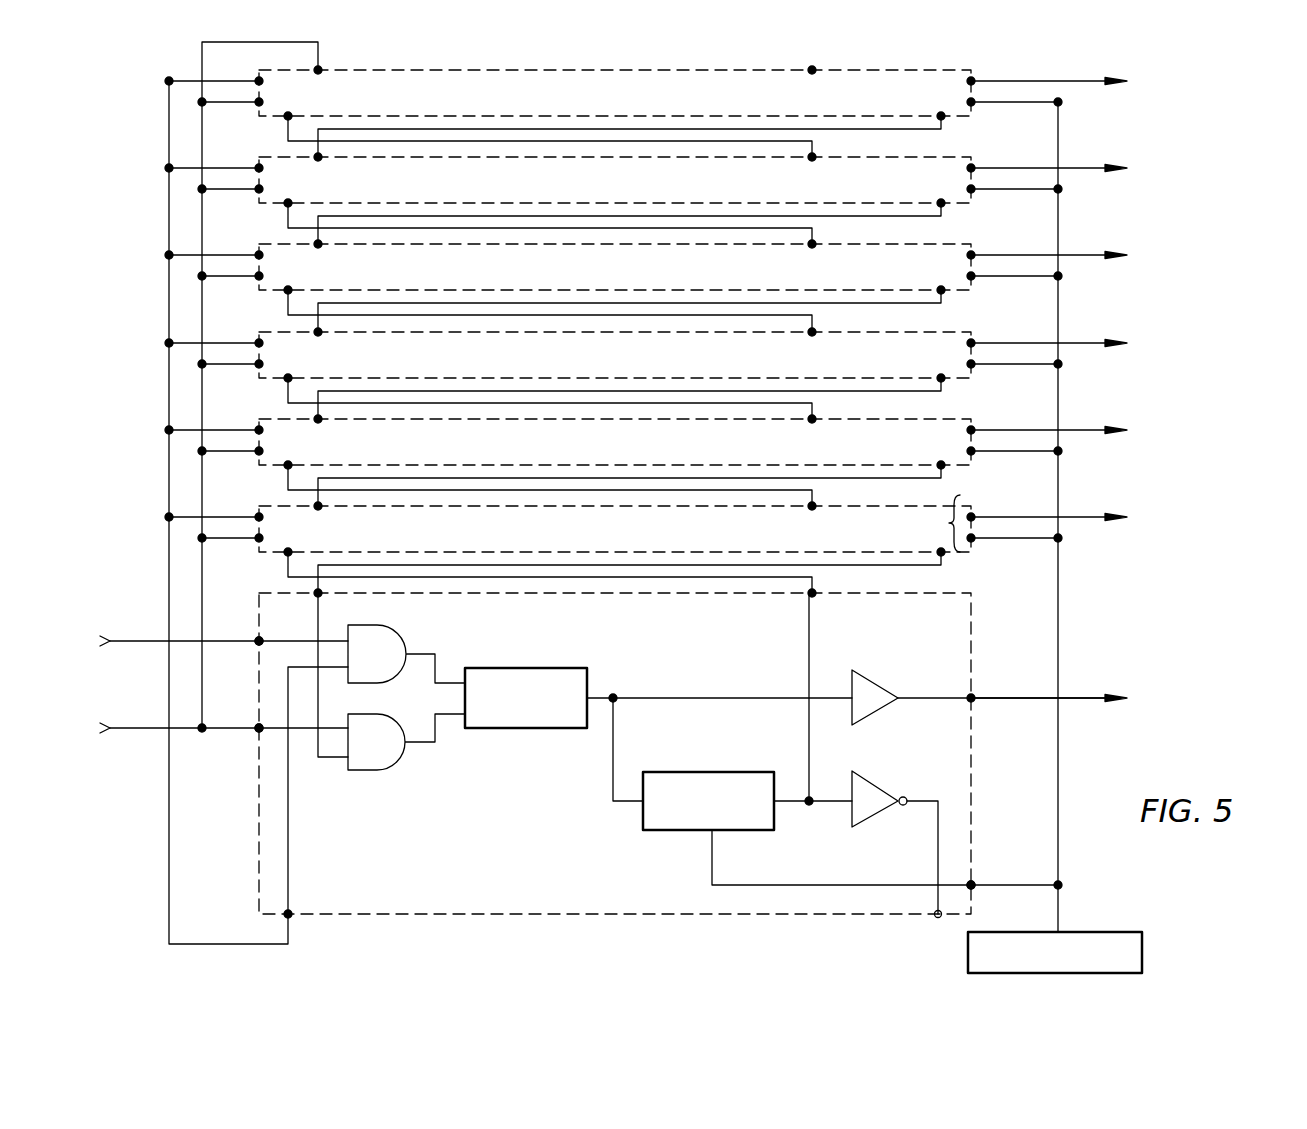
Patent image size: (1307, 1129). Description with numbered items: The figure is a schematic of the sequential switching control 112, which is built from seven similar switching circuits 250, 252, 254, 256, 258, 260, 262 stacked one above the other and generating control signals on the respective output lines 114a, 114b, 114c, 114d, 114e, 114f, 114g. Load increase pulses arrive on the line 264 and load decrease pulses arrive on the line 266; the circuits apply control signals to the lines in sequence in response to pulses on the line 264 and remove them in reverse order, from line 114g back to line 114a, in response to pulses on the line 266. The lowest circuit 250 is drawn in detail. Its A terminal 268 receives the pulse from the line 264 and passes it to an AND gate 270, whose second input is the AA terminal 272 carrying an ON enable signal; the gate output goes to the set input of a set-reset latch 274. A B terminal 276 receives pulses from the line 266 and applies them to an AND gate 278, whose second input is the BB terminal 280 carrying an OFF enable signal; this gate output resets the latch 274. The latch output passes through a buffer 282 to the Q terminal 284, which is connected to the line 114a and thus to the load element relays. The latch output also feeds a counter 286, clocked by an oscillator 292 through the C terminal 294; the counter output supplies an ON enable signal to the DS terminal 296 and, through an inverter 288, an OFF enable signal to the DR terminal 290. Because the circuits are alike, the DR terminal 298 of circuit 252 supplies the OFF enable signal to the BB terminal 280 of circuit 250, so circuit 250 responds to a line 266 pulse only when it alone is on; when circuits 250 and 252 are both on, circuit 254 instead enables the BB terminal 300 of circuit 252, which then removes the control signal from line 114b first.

The sequential switching control 112 is at (722, 493).
The line 114a is at (1090, 700).
The line 114b is at (1088, 517).
The line 114c is at (1093, 430).
The line 114d is at (1092, 343).
The line 114e is at (1097, 255).
The line 114f is at (1097, 168).
The line 114g is at (1097, 81).
The switching circuit 250 is at (971, 593).
The switching circuit 252 is at (971, 506).
The switching circuit 254 is at (971, 419).
The switching circuit 256 is at (971, 332).
The switching circuit 258 is at (971, 244).
The switching circuit 260 is at (971, 157).
The switching circuit 262 is at (971, 70).
The line 264 is at (147, 640).
The line 266 is at (150, 730).
The A terminal 268 is at (257, 641).
The AND gate 270 is at (405, 632).
The AA terminal 272 is at (290, 916).
The set-reset latch 274 is at (585, 668).
The B terminal 276 is at (257, 728).
The AND gate 278 is at (392, 770).
The BB terminal 280 is at (318, 593).
The buffer 282 is at (862, 670).
The Q terminal 284 is at (971, 698).
The counter 286 is at (643, 826).
The inverter 288 is at (878, 815).
The DR terminal 290 is at (936, 918).
The oscillator 292 is at (1110, 932).
The C terminal 294 is at (971, 885).
The DS terminal 296 is at (805, 600).
The DR terminal 298 is at (926, 518).
The BB terminal 300 is at (318, 506).